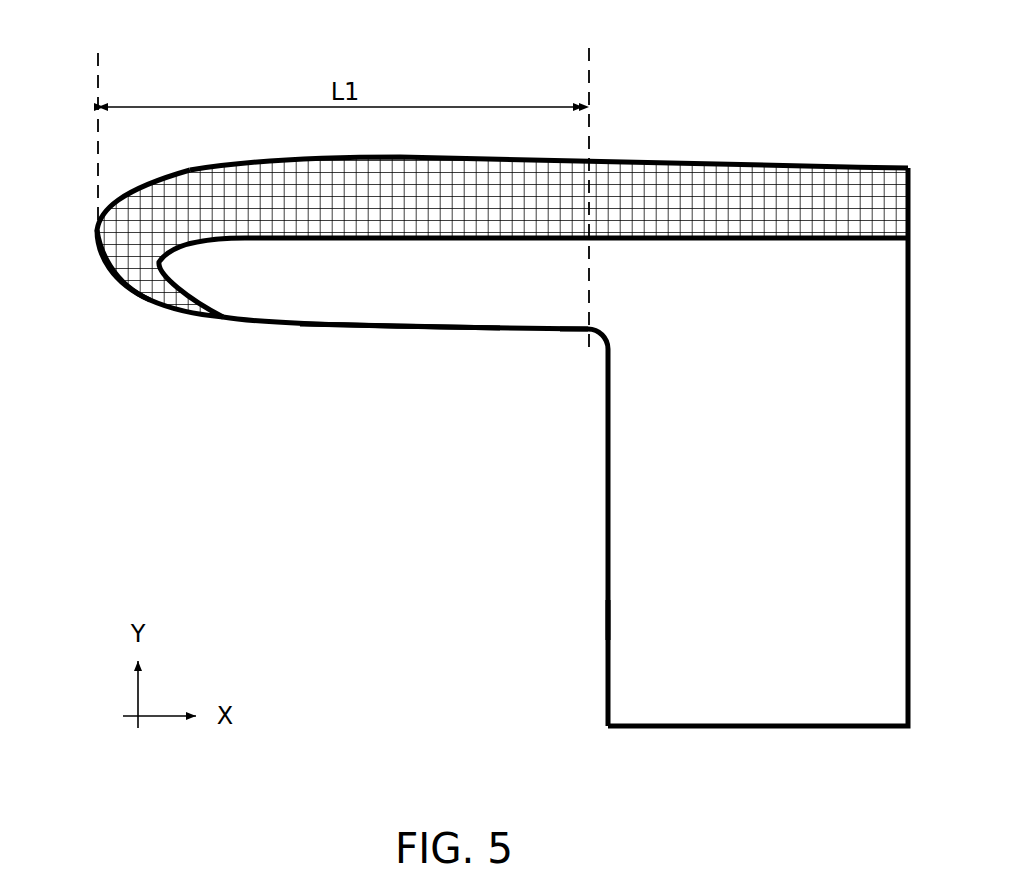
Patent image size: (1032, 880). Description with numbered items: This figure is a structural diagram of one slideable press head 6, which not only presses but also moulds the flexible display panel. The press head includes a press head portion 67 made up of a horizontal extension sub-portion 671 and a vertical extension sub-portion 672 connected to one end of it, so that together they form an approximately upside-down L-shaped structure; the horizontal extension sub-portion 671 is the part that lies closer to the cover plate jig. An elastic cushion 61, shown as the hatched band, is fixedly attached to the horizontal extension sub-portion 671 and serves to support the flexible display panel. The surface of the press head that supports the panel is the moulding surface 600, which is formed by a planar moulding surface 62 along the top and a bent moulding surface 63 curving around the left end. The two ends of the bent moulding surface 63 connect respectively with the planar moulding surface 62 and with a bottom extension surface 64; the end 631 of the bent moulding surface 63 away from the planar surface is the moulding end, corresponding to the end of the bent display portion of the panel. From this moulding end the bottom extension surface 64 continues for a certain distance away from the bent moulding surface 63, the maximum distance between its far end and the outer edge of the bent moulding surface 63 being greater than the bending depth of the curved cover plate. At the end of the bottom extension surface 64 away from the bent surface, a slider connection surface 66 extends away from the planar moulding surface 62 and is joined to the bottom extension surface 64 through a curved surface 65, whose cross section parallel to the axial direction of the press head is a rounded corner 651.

The slideable press head 6 is at (95, 28).
The moulding surface 600 is at (155, 477).
The elastic cushion 61 is at (822, 203).
The planar moulding surface 62 is at (627, 162).
The bent moulding surface 63 is at (97, 230).
The end of the bent moulding surface 631 is at (222, 316).
The bottom extension surface 64 is at (305, 324).
The curved surface 65 is at (500, 463).
The rounded corner 651 is at (594, 332).
The slider connection surface 66 is at (607, 518).
The press head portion 67 is at (338, 457).
The horizontal extension sub-portion 671 is at (445, 295).
The vertical extension sub-portion 672 is at (666, 598).